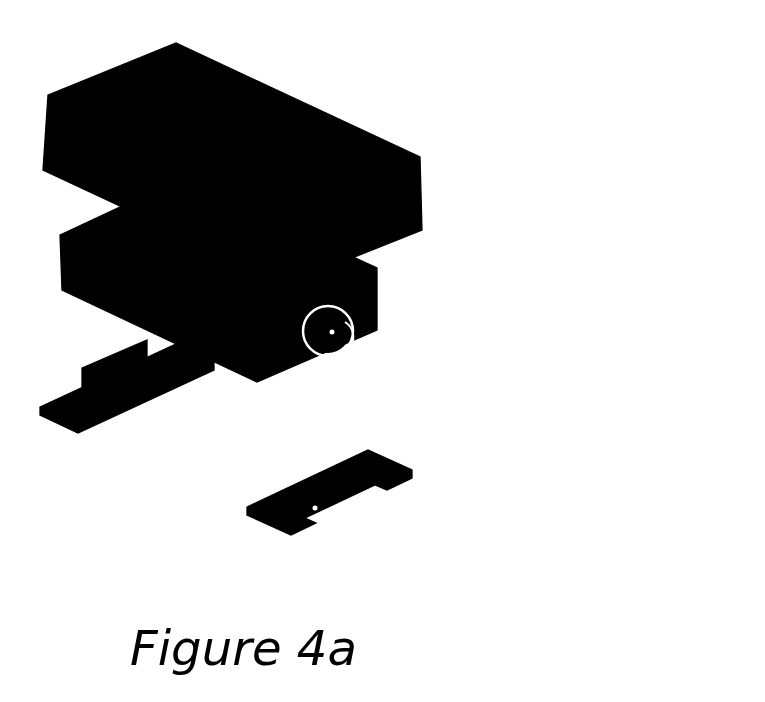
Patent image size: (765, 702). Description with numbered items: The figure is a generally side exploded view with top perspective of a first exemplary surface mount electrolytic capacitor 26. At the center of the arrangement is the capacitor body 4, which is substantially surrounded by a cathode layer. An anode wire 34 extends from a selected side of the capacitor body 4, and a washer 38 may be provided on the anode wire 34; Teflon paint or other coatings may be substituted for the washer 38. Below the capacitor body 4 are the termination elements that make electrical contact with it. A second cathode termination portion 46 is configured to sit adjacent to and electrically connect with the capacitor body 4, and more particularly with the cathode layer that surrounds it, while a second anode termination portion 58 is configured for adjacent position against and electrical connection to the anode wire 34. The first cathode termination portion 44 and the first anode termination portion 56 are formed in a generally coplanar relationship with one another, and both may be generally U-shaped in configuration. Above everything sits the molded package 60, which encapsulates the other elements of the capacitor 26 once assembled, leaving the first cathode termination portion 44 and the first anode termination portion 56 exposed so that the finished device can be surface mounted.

The electrolytic capacitor 26 is at (512, 96).
The molded package 60 is at (422, 180).
The capacitor body 4 is at (367, 285).
The washer 38 is at (318, 353).
The anode wire 34 is at (348, 343).
The second cathode termination portion 46 is at (98, 361).
The first cathode termination portion 44 is at (130, 408).
The first anode termination portion 56 is at (253, 518).
The second anode termination portion 58 is at (317, 487).